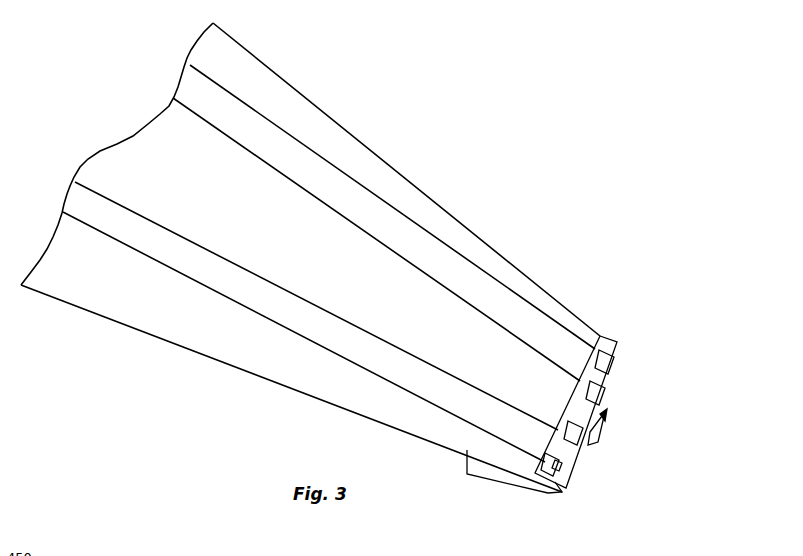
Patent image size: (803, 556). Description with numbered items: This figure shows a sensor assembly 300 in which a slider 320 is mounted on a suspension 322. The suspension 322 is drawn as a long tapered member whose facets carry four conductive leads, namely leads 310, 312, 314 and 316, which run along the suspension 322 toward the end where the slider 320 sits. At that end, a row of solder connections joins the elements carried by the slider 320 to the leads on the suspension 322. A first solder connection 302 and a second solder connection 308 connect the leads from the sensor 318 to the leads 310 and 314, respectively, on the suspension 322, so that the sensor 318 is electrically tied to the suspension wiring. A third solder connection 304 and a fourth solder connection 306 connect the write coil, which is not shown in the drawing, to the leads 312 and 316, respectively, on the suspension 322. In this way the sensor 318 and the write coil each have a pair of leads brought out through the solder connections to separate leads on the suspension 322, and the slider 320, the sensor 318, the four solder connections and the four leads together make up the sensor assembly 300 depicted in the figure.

The sensor assembly 300 is at (172, 410).
The first solder connection 302 is at (553, 478).
The third solder connection 304 is at (577, 448).
The fourth solder connection 306 is at (597, 390).
The second solder connection 308 is at (615, 355).
The lead 310 is at (277, 317).
The lead 312 is at (412, 348).
The lead 314 is at (468, 265).
The lead 316 is at (520, 338).
The sensor 318 is at (602, 423).
The slider 320 is at (500, 471).
The suspension 322 is at (406, 436).